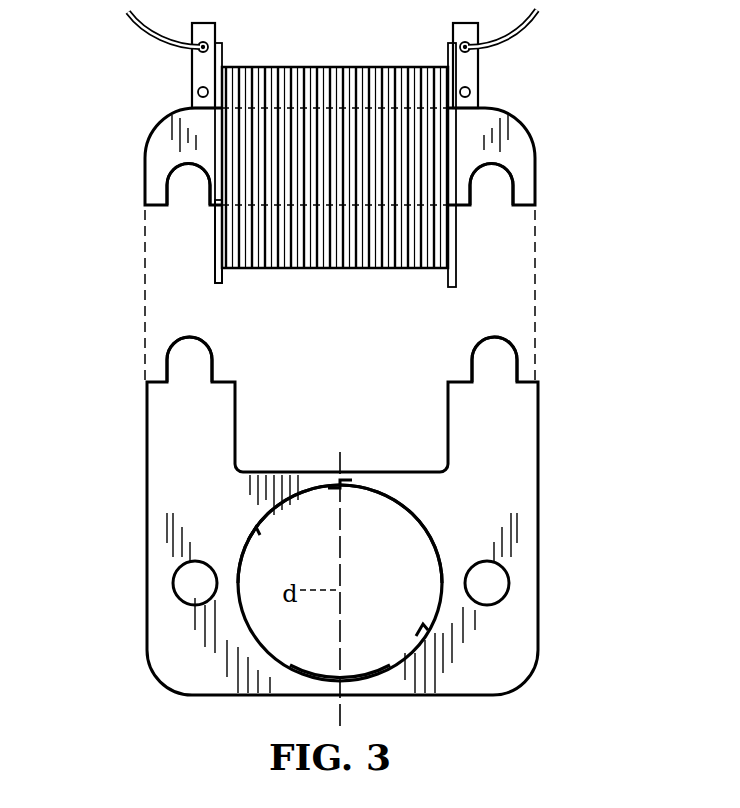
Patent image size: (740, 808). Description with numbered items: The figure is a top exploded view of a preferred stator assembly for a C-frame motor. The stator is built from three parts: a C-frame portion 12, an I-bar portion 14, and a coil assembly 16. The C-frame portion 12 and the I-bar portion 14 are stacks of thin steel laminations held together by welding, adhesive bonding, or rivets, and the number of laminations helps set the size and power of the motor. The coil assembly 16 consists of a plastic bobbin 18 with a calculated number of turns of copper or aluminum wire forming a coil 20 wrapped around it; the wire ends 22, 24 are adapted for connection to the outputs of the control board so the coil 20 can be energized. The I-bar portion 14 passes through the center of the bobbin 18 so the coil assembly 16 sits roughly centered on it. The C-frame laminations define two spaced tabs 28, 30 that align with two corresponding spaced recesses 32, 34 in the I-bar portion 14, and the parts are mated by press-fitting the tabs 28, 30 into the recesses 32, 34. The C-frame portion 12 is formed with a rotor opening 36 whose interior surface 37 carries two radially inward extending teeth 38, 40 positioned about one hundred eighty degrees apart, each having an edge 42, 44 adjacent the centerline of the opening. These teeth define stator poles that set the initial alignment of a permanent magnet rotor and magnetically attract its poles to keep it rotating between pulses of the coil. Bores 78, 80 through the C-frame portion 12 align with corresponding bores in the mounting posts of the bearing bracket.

The C-frame portion 12 is at (147, 603).
The I-bar portion 14 is at (152, 132).
The coil assembly 16 is at (212, 241).
The bobbin 18 is at (214, 262).
The coil 20 is at (310, 262).
The wire end 22 is at (130, 25).
The wire end 24 is at (538, 32).
The tab 28 is at (213, 345).
The tab 30 is at (472, 342).
The recess 32 is at (195, 168).
The recess 34 is at (492, 200).
The rotor opening 36 is at (270, 625).
The interior surface 37 is at (433, 545).
The tooth 38 is at (289, 534).
The tooth 40 is at (422, 630).
The edge 42 is at (348, 486).
The edge 44 is at (340, 675).
The bore 78 is at (188, 585).
The bore 80 is at (490, 582).